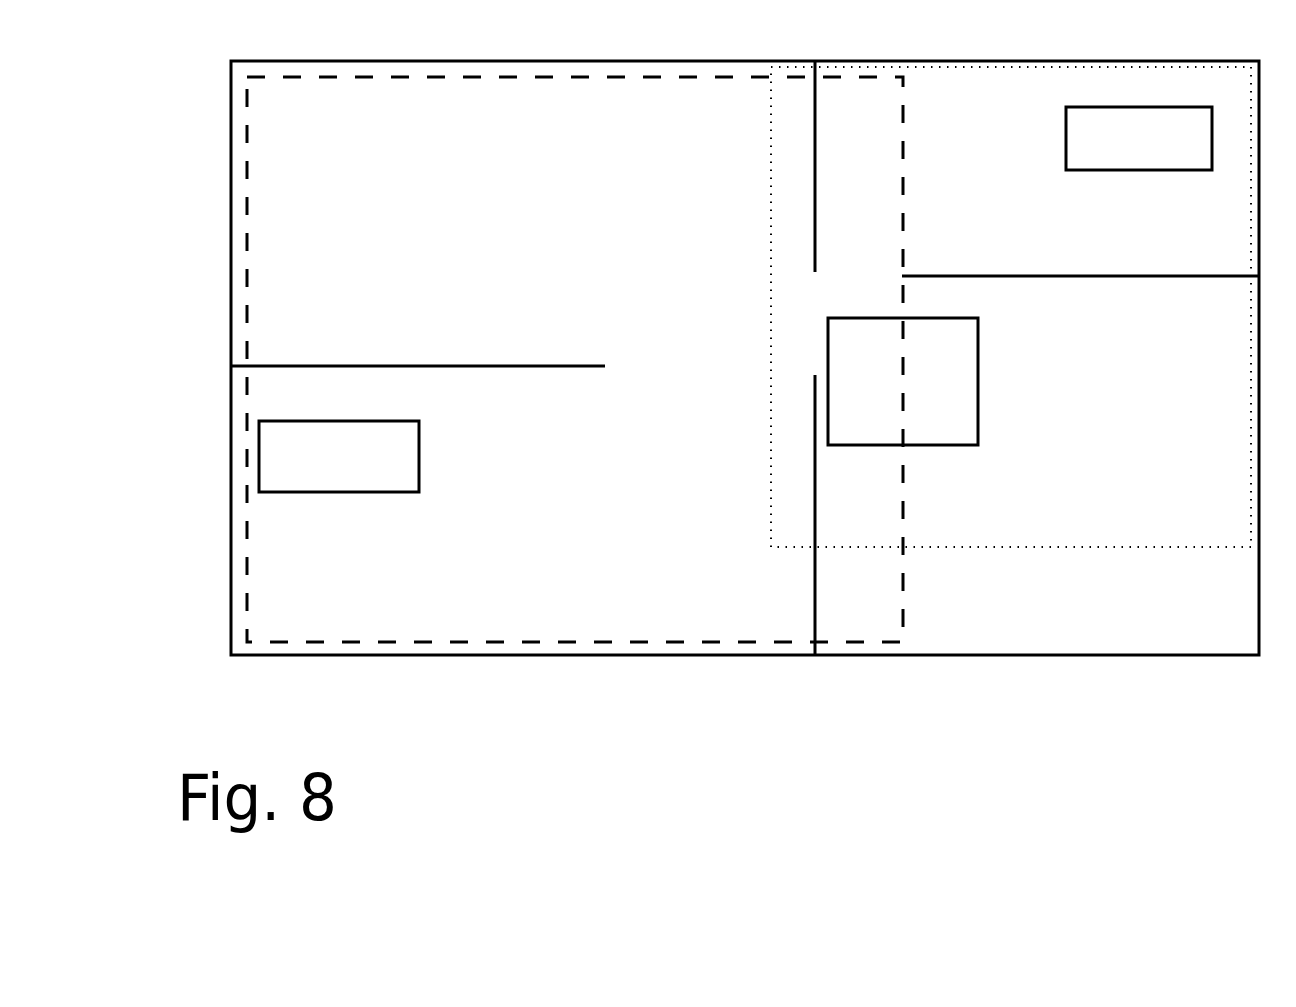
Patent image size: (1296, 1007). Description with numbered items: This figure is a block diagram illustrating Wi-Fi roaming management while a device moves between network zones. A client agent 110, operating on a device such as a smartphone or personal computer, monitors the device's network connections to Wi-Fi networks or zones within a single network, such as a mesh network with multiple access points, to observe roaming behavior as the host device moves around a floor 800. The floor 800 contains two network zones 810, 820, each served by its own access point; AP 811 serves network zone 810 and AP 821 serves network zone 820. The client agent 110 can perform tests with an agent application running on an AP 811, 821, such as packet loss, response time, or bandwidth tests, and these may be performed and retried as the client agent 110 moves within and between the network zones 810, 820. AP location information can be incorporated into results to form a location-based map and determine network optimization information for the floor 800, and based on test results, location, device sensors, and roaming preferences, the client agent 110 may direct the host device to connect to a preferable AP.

The floor 800 is at (970, 655).
The network zone 810 is at (771, 222).
The AP 811 is at (1066, 150).
The network zone 820 is at (412, 78).
The AP 821 is at (420, 452).
The client agent 110 is at (978, 378).